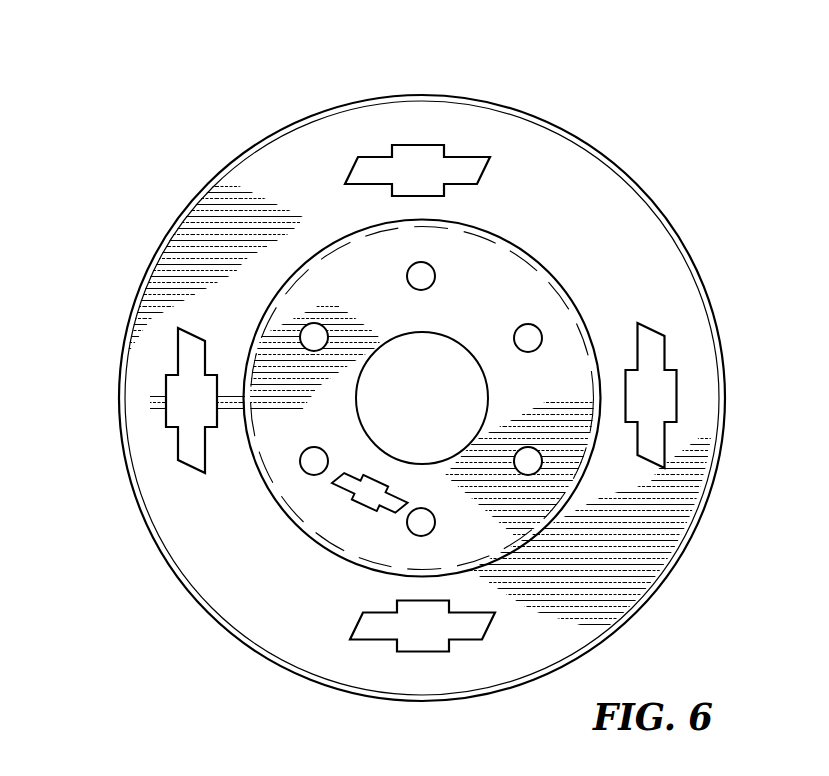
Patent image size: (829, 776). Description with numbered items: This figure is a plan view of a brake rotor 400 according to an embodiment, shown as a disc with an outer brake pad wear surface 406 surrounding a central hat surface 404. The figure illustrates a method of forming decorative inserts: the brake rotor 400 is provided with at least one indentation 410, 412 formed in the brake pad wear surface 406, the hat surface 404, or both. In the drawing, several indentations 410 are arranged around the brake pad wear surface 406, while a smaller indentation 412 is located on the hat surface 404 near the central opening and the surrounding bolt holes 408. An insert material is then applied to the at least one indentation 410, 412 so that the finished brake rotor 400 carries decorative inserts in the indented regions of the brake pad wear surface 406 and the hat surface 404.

The brake rotor 400 is at (137, 127).
The hat surface 404 is at (505, 280).
The brake pad wear surface 406 is at (290, 183).
The bolt hole 408 is at (527, 338).
The indentation 410 is at (470, 153).
The indentation 412 is at (353, 498).